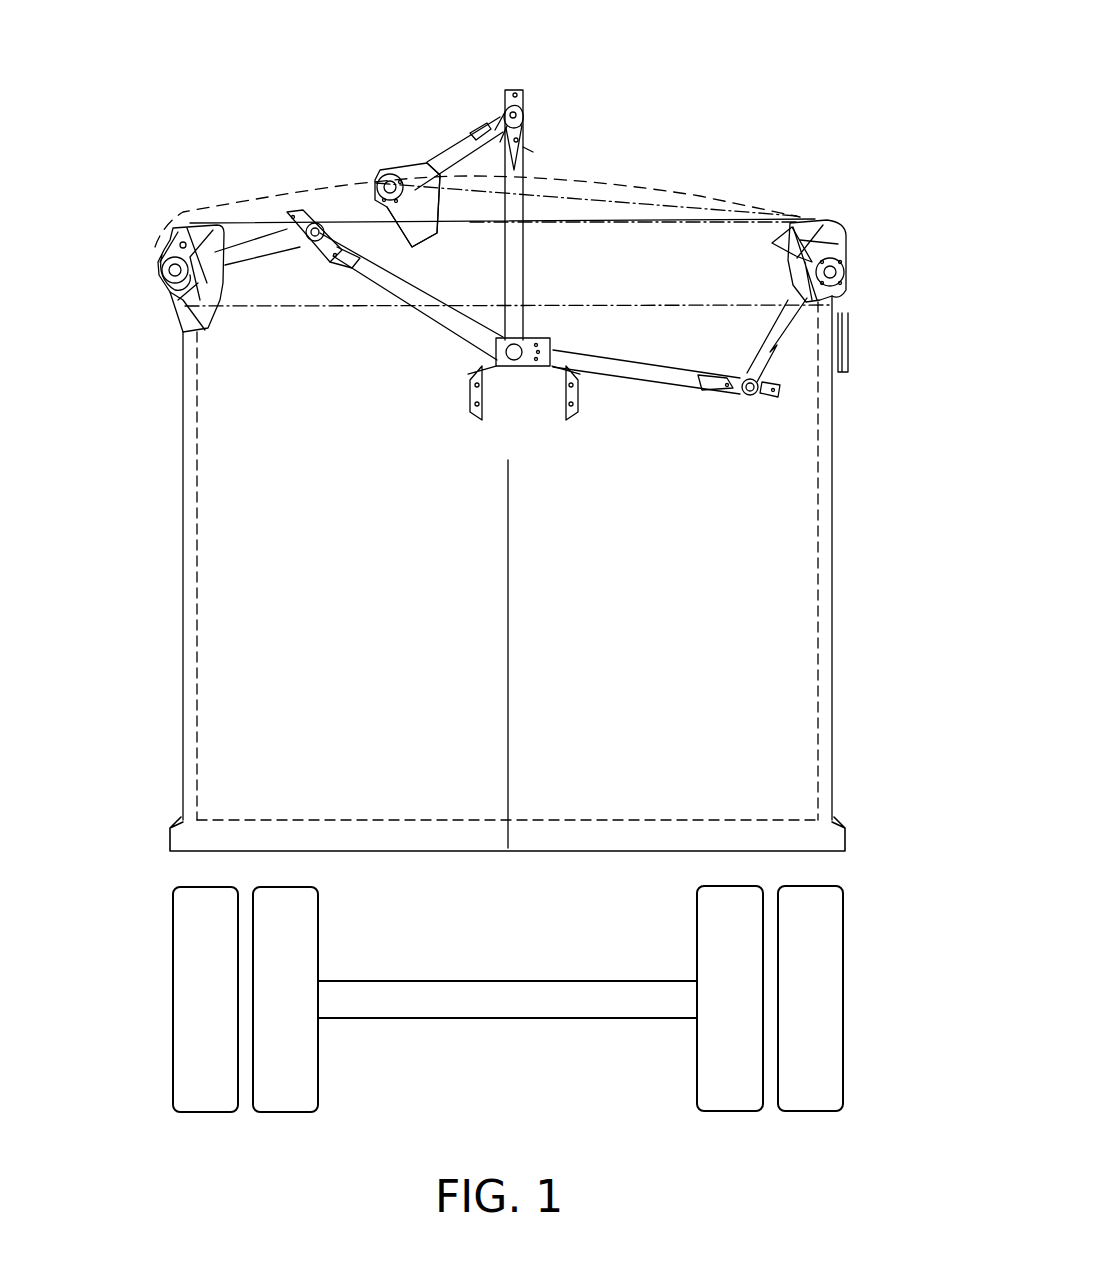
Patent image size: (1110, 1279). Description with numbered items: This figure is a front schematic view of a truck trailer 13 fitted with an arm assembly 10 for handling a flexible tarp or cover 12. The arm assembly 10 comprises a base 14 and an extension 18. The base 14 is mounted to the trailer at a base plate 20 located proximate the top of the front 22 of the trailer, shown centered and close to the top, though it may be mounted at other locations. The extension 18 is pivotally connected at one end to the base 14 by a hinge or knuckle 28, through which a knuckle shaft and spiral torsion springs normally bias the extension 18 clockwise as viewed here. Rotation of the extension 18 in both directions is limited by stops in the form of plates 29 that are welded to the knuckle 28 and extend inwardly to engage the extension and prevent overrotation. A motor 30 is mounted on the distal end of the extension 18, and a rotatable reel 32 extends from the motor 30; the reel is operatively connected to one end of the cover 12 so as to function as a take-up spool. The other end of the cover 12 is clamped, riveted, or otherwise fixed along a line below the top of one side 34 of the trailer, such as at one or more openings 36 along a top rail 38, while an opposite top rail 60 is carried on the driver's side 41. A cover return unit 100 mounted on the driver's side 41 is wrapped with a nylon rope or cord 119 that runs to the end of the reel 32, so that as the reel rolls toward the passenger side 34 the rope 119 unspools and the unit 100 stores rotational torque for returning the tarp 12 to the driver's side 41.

The arm assembly 10 is at (790, 96).
The flexible tarp or cover 12 is at (797, 208).
The truck trailer 13 is at (480, 573).
The base 14 is at (447, 326).
The extension 18 is at (265, 254).
The base plate 20 is at (542, 340).
The front of the trailer 22 is at (717, 592).
The hinge or knuckle 28 is at (503, 104).
The plates 29 is at (548, 157).
The motor 30 is at (432, 238).
The rotatable reel 32 is at (362, 178).
The side of the trailer 34 is at (183, 562).
The openings 36 is at (165, 262).
The top rail 38 is at (214, 298).
The driver's side 41 is at (832, 668).
The opposite top rail 60 is at (852, 230).
The cover return unit 100 is at (847, 376).
The nylon rope or cord 119 is at (645, 207).